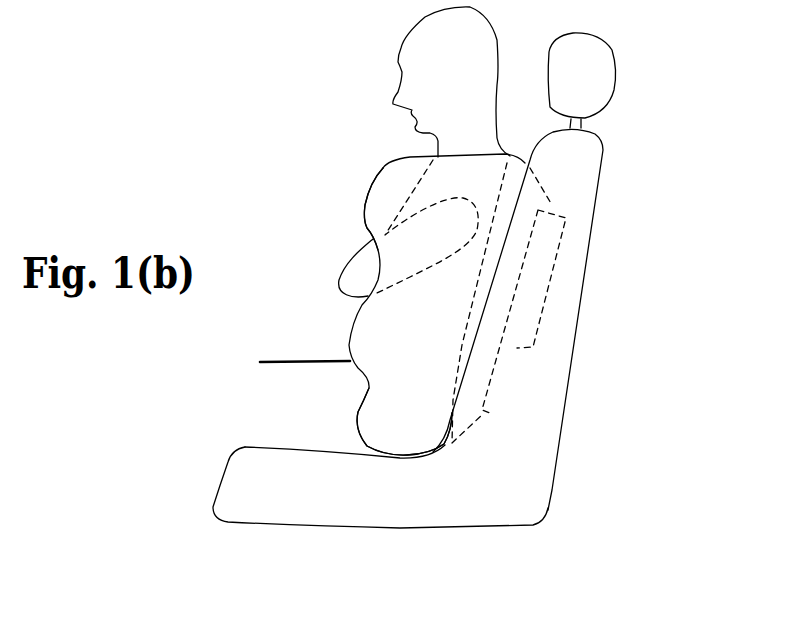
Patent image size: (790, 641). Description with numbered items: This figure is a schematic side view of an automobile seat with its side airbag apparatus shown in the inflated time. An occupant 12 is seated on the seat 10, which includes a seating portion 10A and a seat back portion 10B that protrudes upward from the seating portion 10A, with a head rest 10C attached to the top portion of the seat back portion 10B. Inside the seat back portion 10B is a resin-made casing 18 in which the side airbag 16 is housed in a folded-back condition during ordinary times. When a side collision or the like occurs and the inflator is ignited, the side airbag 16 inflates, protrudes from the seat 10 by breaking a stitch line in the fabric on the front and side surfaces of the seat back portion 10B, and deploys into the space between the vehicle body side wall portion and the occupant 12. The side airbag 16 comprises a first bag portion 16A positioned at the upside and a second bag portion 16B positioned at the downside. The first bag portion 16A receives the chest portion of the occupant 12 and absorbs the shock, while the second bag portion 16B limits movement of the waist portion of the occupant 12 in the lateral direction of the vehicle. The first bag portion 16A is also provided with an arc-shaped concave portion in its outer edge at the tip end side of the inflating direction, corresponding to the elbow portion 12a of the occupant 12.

The seat 10 is at (456, 315).
The seating portion 10A is at (338, 530).
The seat back portion 10B is at (603, 143).
The head rest 10C is at (618, 72).
The occupant 12 is at (384, 52).
The elbow portion 12a is at (353, 283).
The side airbag 16 is at (402, 293).
The first bag portion 16A is at (380, 222).
The second bag portion 16B is at (392, 421).
The casing 18 is at (485, 415).